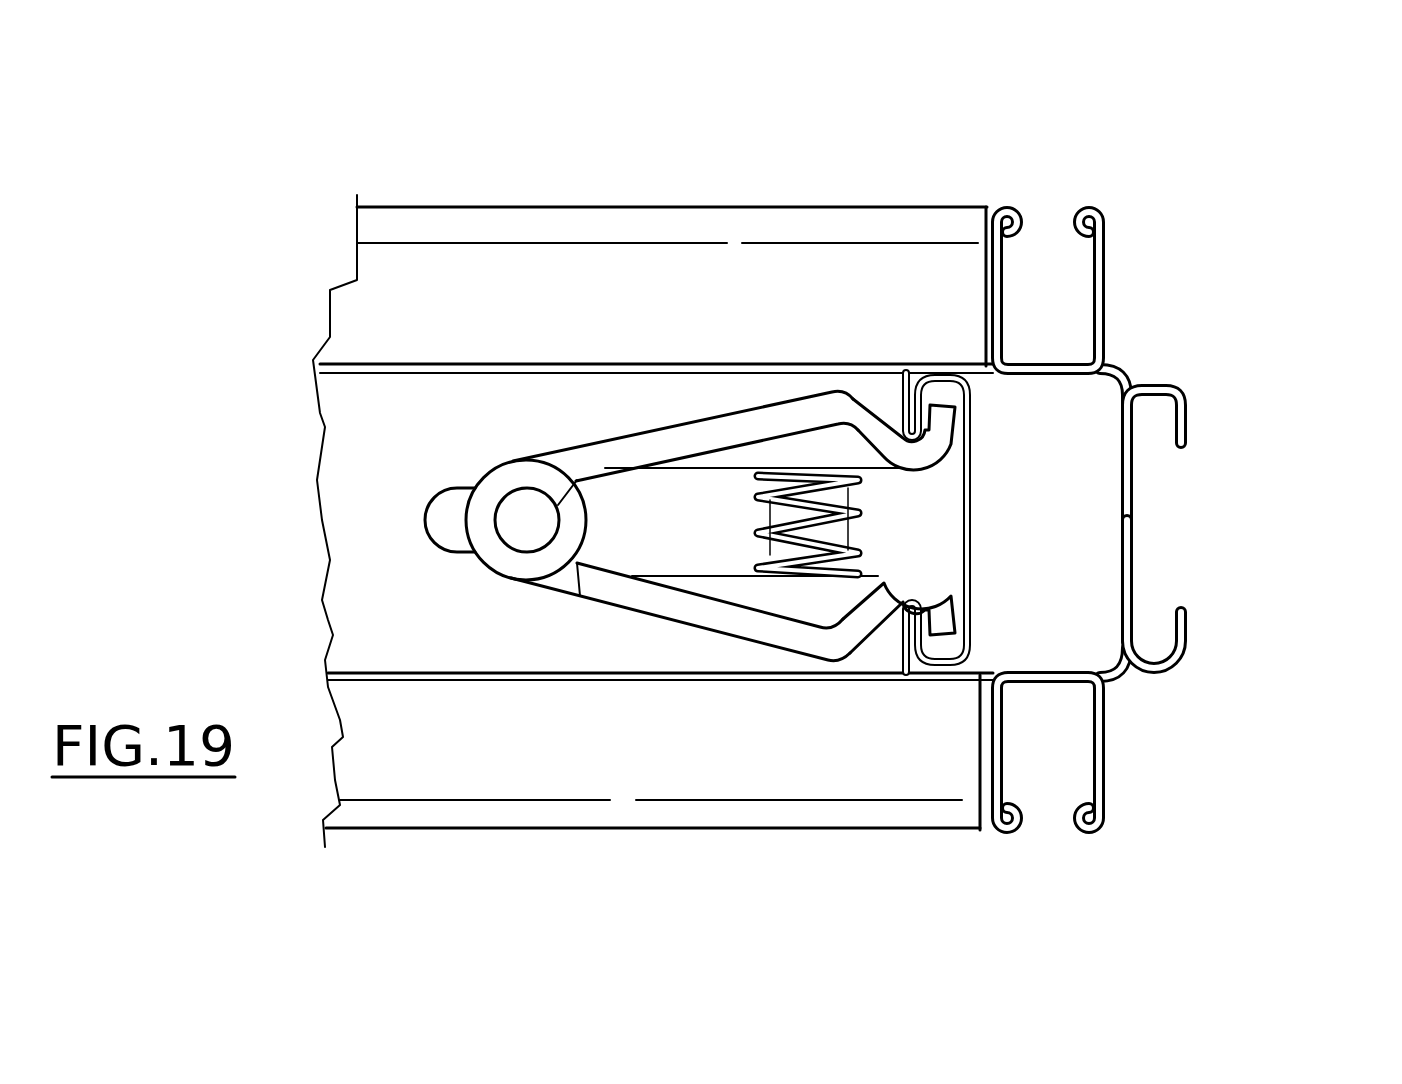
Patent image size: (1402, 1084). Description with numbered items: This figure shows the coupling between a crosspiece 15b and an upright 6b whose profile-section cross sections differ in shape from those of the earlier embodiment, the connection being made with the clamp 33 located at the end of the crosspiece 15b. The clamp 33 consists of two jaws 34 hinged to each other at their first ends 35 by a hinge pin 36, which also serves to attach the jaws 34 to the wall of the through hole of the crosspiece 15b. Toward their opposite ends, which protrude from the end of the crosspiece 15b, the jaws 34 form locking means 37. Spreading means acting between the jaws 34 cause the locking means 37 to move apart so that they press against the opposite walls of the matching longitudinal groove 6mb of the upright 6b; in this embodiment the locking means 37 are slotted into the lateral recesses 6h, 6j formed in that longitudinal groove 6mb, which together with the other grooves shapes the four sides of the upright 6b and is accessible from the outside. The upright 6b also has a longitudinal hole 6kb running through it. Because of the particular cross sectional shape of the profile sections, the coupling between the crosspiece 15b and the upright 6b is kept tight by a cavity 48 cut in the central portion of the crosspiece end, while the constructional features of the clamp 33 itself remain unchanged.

The clamp 33 is at (425, 443).
The jaws 34 is at (658, 445).
The first ends 35 is at (548, 420).
The hinge pin 36 is at (520, 524).
The locking means 37 is at (933, 438).
The cavity 48 is at (912, 672).
The crosspiece 15b is at (737, 840).
The lateral recess 6h is at (943, 395).
The lateral recess 6j is at (934, 650).
The longitudinal hole 6kb is at (1092, 630).
The longitudinal groove 6mb is at (1152, 523).
The upright 6b is at (1224, 465).